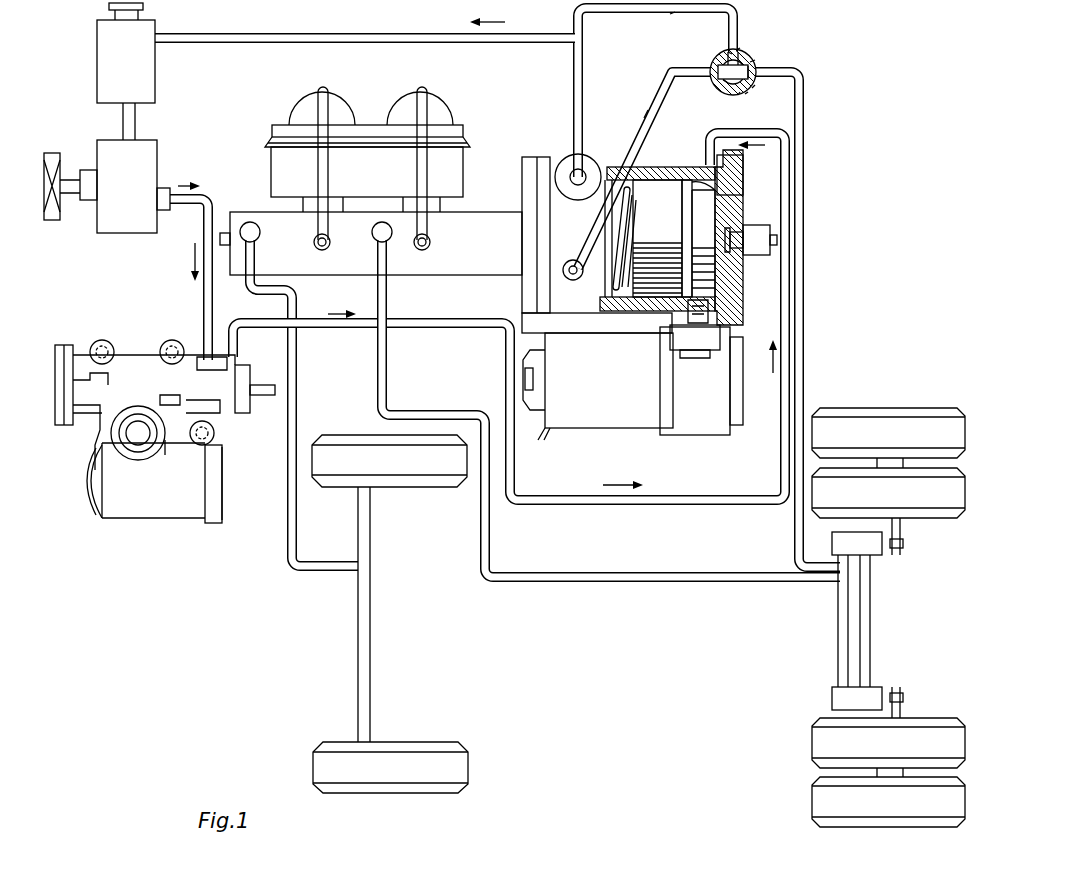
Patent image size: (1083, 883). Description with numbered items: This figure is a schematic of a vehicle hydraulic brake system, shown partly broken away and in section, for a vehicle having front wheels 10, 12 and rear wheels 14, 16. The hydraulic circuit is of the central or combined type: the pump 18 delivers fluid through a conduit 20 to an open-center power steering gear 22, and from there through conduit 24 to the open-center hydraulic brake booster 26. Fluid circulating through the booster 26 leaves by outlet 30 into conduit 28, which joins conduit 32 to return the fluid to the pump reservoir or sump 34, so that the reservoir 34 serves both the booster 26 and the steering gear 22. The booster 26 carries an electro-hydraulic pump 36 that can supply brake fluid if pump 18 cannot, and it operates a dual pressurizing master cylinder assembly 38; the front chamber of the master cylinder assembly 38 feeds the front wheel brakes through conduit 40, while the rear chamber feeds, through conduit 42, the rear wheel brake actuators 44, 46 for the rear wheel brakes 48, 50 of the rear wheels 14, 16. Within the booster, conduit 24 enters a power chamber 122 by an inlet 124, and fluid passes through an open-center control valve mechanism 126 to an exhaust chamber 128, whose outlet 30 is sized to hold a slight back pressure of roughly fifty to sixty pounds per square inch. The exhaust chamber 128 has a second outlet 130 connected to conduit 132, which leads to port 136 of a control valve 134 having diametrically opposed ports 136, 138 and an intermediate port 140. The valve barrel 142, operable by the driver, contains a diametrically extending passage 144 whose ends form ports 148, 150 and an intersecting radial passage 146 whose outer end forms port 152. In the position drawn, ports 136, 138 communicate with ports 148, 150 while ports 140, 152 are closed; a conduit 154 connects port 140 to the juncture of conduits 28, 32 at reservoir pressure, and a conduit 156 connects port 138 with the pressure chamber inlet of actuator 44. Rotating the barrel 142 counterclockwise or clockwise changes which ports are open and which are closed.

The front wheel 10 is at (397, 468).
The front wheel 12 is at (410, 757).
The rear wheel 14 is at (862, 425).
The rear wheel 16 is at (895, 808).
The pump 18 is at (122, 220).
The conduit 20 is at (204, 303).
The power steering gear 22 is at (128, 500).
The conduit 24 is at (322, 330).
The hydraulic brake booster 26 is at (537, 155).
The conduit 28 is at (573, 62).
The outlet 30 is at (584, 170).
The conduit 32 is at (382, 35).
The reservoir 34 is at (110, 70).
The electro-hydraulic pump 36 is at (612, 418).
The master cylinder assembly 38 is at (272, 125).
The conduit 40 is at (288, 538).
The conduit 42 is at (690, 580).
The rear wheel brake actuator 44 is at (878, 548).
The rear wheel brake actuator 46 is at (880, 692).
The rear wheel brake 48 is at (903, 534).
The rear wheel brake 50 is at (903, 712).
The power chamber 122 is at (722, 302).
The inlet 124 is at (750, 170).
The open-center control valve mechanism 126 is at (742, 226).
The exhaust chamber 128 is at (628, 316).
The outlet 130 is at (576, 316).
The conduit 132 is at (642, 118).
The control valve 134 is at (706, 102).
The port 136 is at (715, 64).
The port 138 is at (757, 70).
The port 140 is at (740, 48).
The valve barrel 142 is at (752, 62).
The diametrically extending passage 144 is at (730, 52).
The radially extending passage 146 is at (745, 96).
The port 148 is at (724, 80).
The port 150 is at (752, 88).
The port 152 is at (738, 95).
The conduit 154 is at (672, 14).
The conduit 156 is at (806, 206).